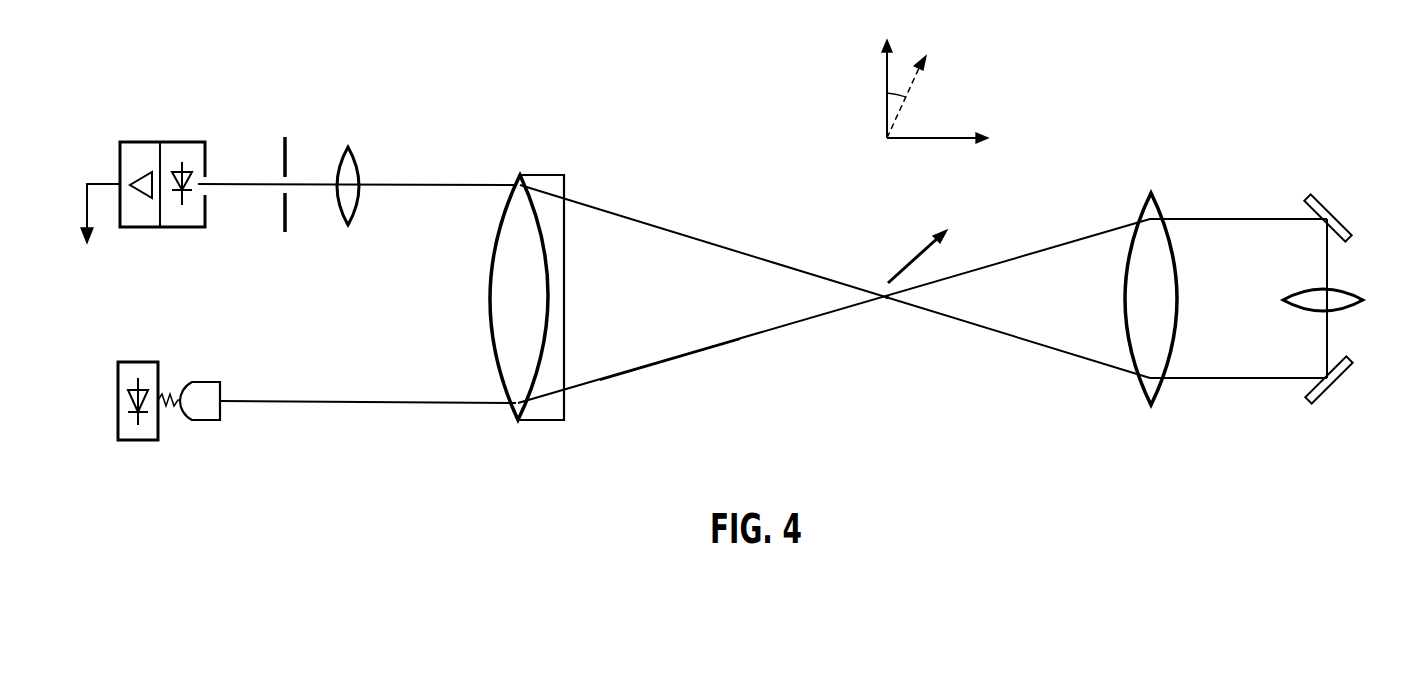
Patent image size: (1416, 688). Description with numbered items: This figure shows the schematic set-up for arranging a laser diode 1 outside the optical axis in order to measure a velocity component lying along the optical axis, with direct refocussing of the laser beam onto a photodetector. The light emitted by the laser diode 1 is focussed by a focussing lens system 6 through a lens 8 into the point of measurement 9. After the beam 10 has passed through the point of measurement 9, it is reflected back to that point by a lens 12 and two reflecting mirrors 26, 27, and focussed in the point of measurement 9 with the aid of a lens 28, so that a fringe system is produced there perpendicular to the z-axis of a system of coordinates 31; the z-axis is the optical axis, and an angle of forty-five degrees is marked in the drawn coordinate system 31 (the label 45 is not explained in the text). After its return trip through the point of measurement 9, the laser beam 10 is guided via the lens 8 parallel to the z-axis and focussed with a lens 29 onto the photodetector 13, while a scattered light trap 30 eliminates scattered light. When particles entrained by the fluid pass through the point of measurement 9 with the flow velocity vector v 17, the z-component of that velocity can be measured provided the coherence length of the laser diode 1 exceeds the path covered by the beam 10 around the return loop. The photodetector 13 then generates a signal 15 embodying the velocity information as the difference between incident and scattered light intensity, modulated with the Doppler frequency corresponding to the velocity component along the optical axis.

The laser diode 1 is at (131, 437).
The focussing lens system 6 is at (205, 422).
The lens 8 is at (538, 178).
The point of measurement 9 is at (887, 303).
The beam 10 is at (667, 363).
The lens 12 is at (1153, 195).
The photodetector 13 is at (176, 143).
The signal 15 is at (97, 231).
The velocity vector v 17 is at (932, 239).
The reflecting mirror 26 is at (1335, 212).
The reflecting mirror 27 is at (1330, 385).
The lens 28 is at (1355, 300).
The lens 29 is at (350, 148).
The scattered light trap 30 is at (285, 138).
The system of coordinates 31 is at (878, 143).
The 45 degree angle 45 is at (890, 108).